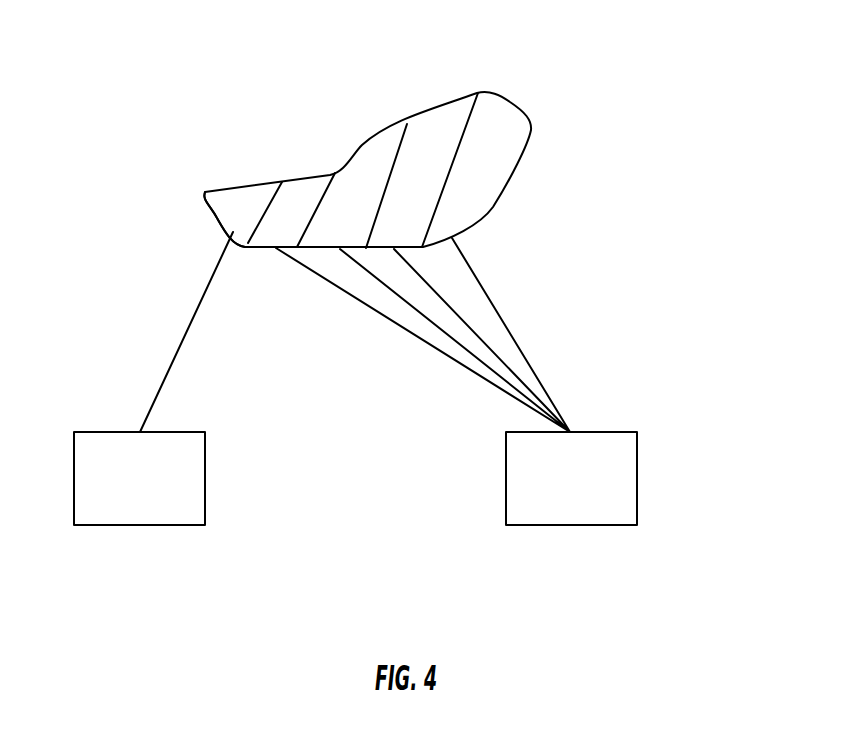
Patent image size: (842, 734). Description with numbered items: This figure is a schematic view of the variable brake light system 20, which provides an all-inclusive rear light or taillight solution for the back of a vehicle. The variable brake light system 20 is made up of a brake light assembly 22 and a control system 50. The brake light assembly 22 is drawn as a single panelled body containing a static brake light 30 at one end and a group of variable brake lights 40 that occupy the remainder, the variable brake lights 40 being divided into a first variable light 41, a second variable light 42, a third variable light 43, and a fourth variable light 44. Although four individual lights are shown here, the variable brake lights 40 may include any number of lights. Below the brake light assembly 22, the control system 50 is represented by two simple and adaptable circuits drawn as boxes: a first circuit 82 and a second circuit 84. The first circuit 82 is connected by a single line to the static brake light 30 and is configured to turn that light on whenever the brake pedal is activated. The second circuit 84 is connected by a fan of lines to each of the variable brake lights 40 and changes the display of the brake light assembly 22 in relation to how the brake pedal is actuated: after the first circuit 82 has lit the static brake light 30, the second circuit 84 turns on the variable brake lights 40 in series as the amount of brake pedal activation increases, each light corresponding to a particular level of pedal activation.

The variable brake light system 20 is at (112, 106).
The brake light assembly 22 is at (536, 143).
The static brake light 30 is at (237, 180).
The variable brake lights 40 is at (461, 94).
The first variable light 41 is at (303, 175).
The second variable light 42 is at (363, 143).
The third variable light 43 is at (431, 108).
The fourth variable light 44 is at (500, 102).
The control system 50 is at (683, 420).
The first circuit 82 is at (88, 432).
The second circuit 84 is at (617, 432).